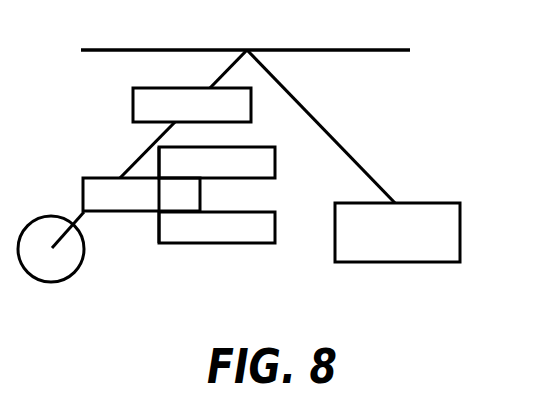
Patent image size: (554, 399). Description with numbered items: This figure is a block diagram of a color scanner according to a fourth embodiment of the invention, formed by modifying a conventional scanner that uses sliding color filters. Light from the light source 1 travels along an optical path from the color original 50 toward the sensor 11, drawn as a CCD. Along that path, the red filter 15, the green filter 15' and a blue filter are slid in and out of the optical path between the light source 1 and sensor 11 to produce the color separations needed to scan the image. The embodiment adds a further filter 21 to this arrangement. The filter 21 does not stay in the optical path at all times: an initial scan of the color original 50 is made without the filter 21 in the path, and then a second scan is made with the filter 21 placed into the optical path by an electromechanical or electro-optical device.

The color original 50 is at (327, 48).
The filter 21 is at (133, 103).
The red filter 15 is at (246, 168).
The green filter 15' is at (110, 189).
The light source 1 is at (38, 221).
The sensor 11 is at (460, 232).